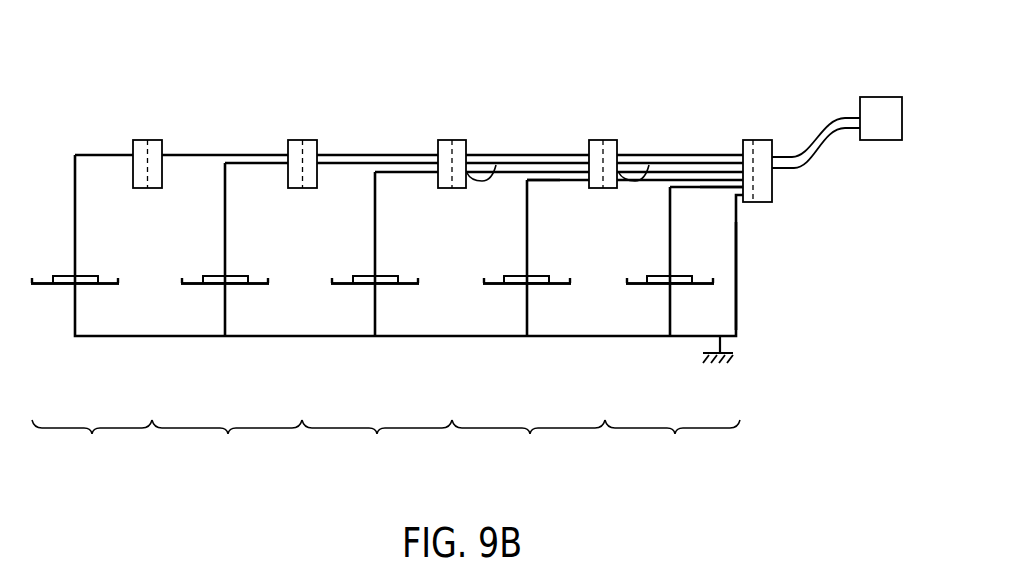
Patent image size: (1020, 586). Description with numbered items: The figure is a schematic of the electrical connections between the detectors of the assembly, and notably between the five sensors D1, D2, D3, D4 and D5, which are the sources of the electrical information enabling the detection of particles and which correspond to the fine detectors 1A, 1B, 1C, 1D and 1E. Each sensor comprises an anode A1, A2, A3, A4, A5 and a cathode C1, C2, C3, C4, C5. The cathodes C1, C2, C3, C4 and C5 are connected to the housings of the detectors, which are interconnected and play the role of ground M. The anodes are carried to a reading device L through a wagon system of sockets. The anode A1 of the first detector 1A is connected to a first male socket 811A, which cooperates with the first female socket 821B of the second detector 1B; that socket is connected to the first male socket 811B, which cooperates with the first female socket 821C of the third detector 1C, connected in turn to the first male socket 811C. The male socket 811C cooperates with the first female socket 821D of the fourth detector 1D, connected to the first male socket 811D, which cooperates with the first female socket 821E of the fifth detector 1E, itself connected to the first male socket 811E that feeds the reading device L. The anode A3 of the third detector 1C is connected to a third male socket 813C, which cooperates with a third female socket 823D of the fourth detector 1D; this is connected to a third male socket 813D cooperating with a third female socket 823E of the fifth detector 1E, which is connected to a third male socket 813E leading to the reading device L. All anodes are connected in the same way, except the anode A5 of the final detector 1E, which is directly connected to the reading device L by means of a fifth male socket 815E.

The first male socket 811A is at (134, 154).
The first female socket 821B is at (161, 154).
The first male socket 811B is at (289, 154).
The first female socket 821C is at (316, 154).
The first male socket 811C is at (439, 154).
The first female socket 821D is at (466, 154).
The third female socket 823D is at (496, 165).
The first male socket 811D is at (590, 154).
The first female socket 821E is at (617, 154).
The third female socket 823E is at (649, 165).
The first male socket 811E is at (744, 154).
The third male socket 813C is at (438, 176).
The third male socket 813D is at (588, 182).
The third male socket 813E is at (737, 192).
The fifth male socket 815E is at (718, 187).
The sensor D1 is at (75, 266).
The sensor D2 is at (225, 266).
The sensor D3 is at (375, 266).
The sensor D4 is at (527, 266).
The sensor D5 is at (670, 266).
The anode A1 is at (62, 273).
The anode A2 is at (235, 273).
The anode A3 is at (390, 273).
The anode A4 is at (535, 273).
The anode A5 is at (680, 273).
The cathode C1 is at (55, 287).
The cathode C2 is at (193, 287).
The cathode C3 is at (342, 287).
The cathode C4 is at (492, 287).
The cathode C5 is at (637, 287).
The reading device L is at (837, 132).
The ground M is at (733, 355).
The first detector 1A is at (92, 446).
The second detector 1B is at (227, 446).
The third detector 1C is at (377, 446).
The fourth detector 1D is at (528, 446).
The fifth detector 1E is at (672, 446).